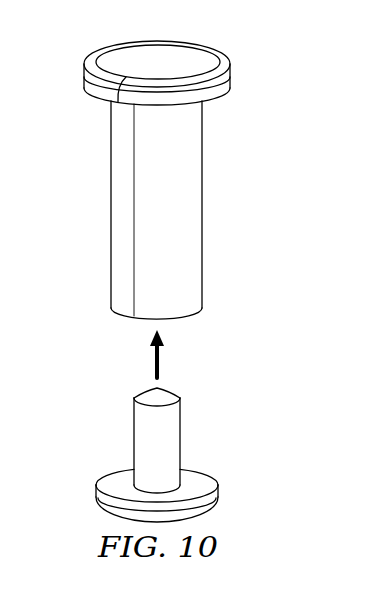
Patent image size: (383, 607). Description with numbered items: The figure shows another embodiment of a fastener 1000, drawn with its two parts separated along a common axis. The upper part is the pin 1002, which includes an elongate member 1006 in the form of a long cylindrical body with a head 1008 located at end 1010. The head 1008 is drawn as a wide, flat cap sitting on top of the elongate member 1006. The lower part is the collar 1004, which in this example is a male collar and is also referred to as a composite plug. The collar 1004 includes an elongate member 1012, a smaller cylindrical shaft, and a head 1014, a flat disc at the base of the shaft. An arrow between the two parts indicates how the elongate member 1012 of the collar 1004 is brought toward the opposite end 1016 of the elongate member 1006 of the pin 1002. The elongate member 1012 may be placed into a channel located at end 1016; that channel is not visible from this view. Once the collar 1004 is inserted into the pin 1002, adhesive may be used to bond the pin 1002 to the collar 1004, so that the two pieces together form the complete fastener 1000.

The fastener 1000 is at (298, 222).
The pin 1002 is at (203, 165).
The collar 1004 is at (181, 425).
The elongate member 1006 is at (133, 143).
The head 1008 is at (229, 61).
The end 1010 is at (122, 58).
The elongate member 1012 is at (145, 390).
The head 1014 is at (96, 490).
The end 1016 is at (187, 318).